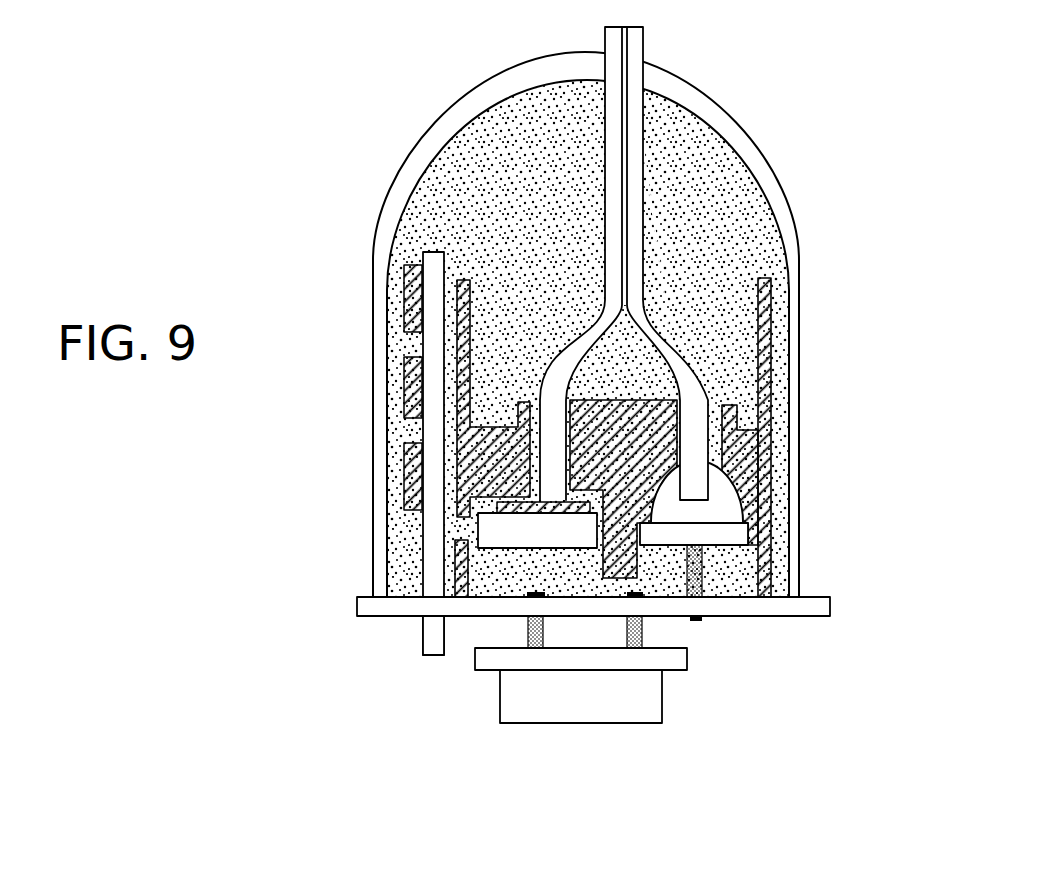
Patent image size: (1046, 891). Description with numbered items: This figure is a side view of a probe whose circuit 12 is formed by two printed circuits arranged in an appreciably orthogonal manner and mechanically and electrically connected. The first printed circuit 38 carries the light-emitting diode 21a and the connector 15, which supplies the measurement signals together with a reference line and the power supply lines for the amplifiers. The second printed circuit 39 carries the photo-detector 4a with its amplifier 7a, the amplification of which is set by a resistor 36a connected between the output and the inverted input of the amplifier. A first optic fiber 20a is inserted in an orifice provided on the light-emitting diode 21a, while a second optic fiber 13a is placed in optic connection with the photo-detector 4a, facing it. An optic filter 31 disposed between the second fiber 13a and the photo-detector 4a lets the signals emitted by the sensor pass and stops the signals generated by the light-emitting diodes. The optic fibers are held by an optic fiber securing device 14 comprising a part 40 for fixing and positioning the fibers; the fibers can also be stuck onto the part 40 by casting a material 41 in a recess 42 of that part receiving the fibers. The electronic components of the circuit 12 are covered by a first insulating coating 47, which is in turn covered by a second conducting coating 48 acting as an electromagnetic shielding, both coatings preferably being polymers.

The second conducting coating 48 is at (703, 88).
The first insulating coating 47 is at (735, 150).
The material 41 is at (740, 345).
The recess 42 is at (773, 298).
The part for fixing and positioning of the optic fibers 40 is at (759, 467).
The optic fiber securing device 14 is at (772, 403).
The light-emitting diode 21a is at (713, 508).
The first optic fiber 20a is at (653, 328).
The second optic fiber 13a is at (592, 328).
The resistor 36a is at (404, 298).
The amplifier 7a is at (404, 378).
The second printed circuit 39 is at (432, 567).
The optic filter 31 is at (503, 503).
The photo-detector 4a is at (492, 527).
The circuit 12 is at (425, 638).
The first printed circuit 38 is at (810, 610).
The connector 15 is at (655, 692).